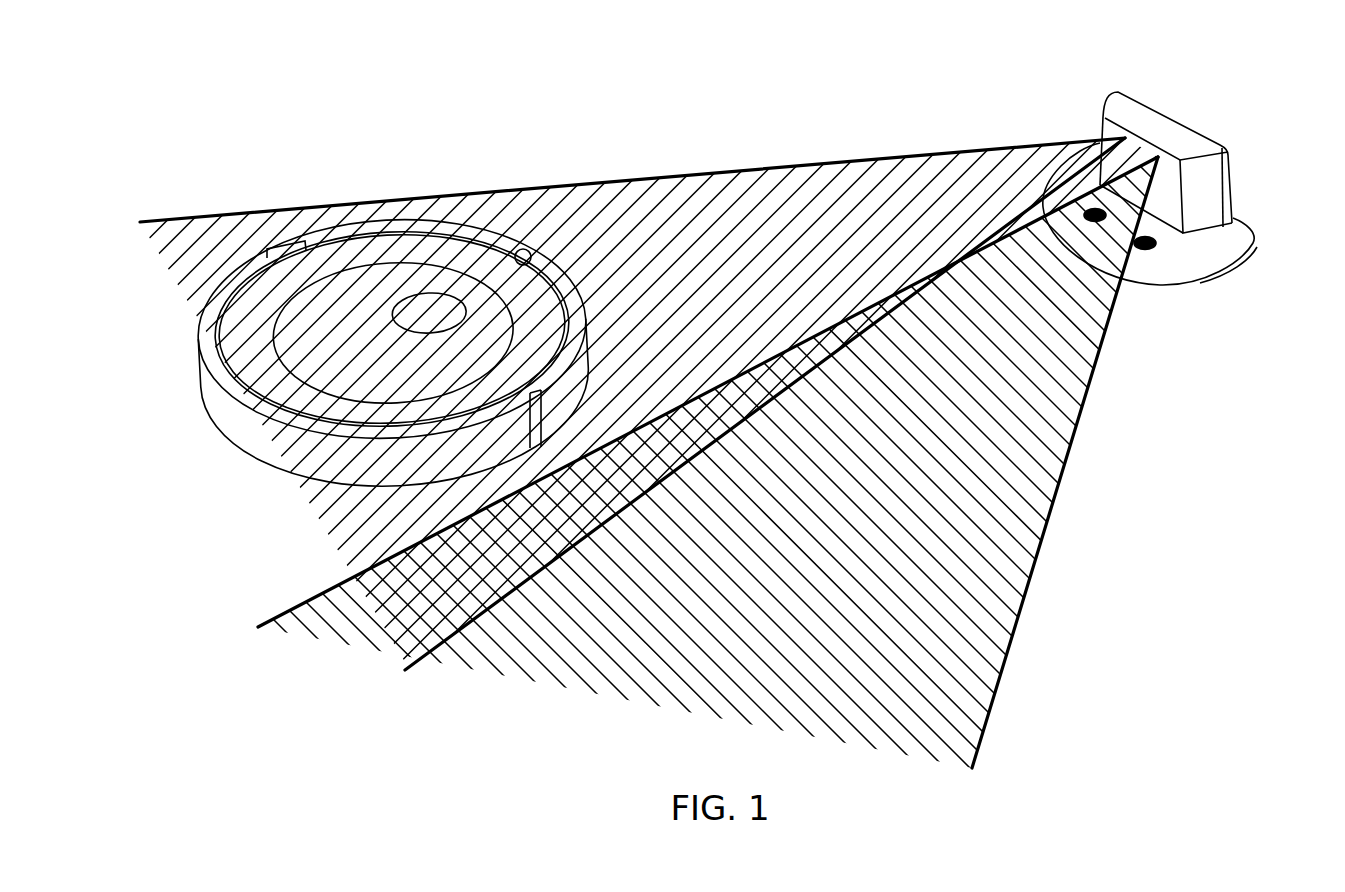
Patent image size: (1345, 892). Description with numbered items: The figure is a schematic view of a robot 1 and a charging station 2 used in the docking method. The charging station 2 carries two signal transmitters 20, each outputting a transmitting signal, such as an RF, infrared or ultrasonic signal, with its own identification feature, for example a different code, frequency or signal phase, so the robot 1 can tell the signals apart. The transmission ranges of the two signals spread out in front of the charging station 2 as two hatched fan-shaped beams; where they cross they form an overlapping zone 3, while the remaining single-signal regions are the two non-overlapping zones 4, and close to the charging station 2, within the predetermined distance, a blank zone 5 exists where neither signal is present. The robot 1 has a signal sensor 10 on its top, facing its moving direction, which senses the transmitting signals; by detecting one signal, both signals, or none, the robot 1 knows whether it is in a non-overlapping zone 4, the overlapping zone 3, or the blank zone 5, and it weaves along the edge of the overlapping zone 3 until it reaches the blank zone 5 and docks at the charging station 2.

The robot 1 is at (232, 410).
The signal sensor 10 is at (524, 252).
The charging station 2 is at (1187, 169).
The signal transmitter 20 is at (1108, 120).
The overlapping zone 3 is at (511, 566).
The non-overlapping zone 4 is at (843, 205).
The blank zone 5 is at (1083, 187).